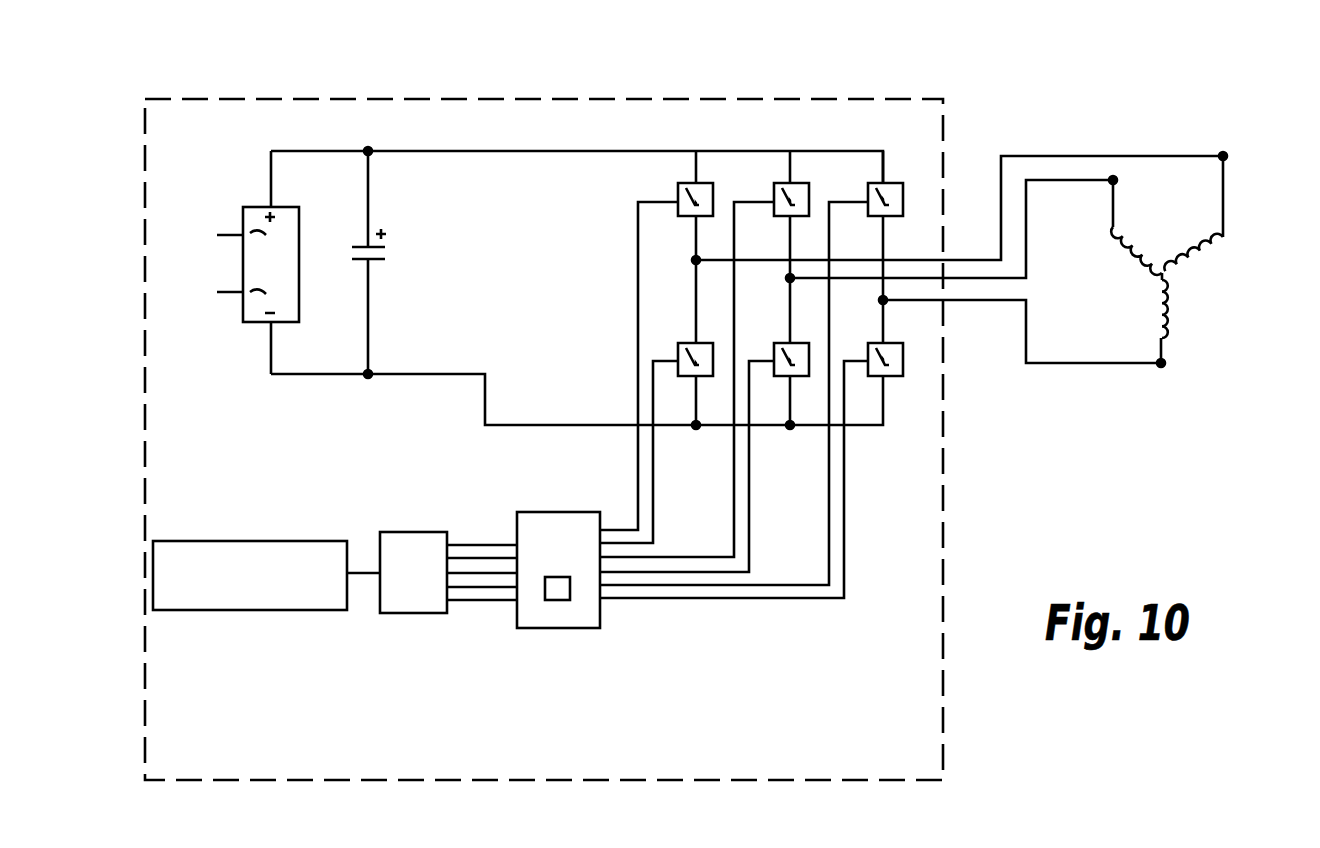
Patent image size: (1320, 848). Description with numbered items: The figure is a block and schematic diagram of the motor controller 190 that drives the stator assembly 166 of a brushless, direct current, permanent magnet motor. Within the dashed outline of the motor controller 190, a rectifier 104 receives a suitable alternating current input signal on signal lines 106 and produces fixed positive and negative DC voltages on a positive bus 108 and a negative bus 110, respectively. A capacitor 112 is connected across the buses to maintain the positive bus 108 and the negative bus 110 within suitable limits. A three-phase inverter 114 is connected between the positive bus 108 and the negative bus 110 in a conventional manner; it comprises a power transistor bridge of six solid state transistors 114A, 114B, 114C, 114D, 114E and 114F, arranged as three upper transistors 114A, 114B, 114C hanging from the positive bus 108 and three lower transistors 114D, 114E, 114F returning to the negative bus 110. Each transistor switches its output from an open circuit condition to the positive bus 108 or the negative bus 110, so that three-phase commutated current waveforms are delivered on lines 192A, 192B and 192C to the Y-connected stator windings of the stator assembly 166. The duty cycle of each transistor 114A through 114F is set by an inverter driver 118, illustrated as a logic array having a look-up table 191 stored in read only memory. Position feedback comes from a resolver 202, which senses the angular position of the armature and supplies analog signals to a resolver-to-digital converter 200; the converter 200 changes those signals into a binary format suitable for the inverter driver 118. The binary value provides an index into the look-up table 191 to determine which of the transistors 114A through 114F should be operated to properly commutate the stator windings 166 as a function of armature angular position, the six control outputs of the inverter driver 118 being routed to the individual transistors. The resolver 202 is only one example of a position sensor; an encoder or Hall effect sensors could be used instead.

The rectifier 104 is at (255, 207).
The signal lines 106 is at (227, 292).
The positive bus 108 is at (437, 151).
The negative bus 110 is at (415, 374).
The capacitor 112 is at (395, 250).
The three-phase inverter 114 is at (883, 127).
The solid state transistor 114A is at (678, 195).
The solid state transistor 114B is at (776, 183).
The solid state transistor 114C is at (870, 183).
The solid state transistor 114D is at (683, 344).
The solid state transistor 114E is at (783, 375).
The solid state transistor 114F is at (903, 368).
The inverter driver 118 is at (555, 512).
The stator assembly 166 is at (1158, 229).
The motor controller 190 is at (790, 85).
The look-up table 191 is at (560, 600).
The line 192A is at (975, 256).
The line 192B is at (1078, 178).
The line 192C is at (1057, 364).
The resolver-to-digital converter 200 is at (408, 532).
The resolver 202 is at (272, 610).